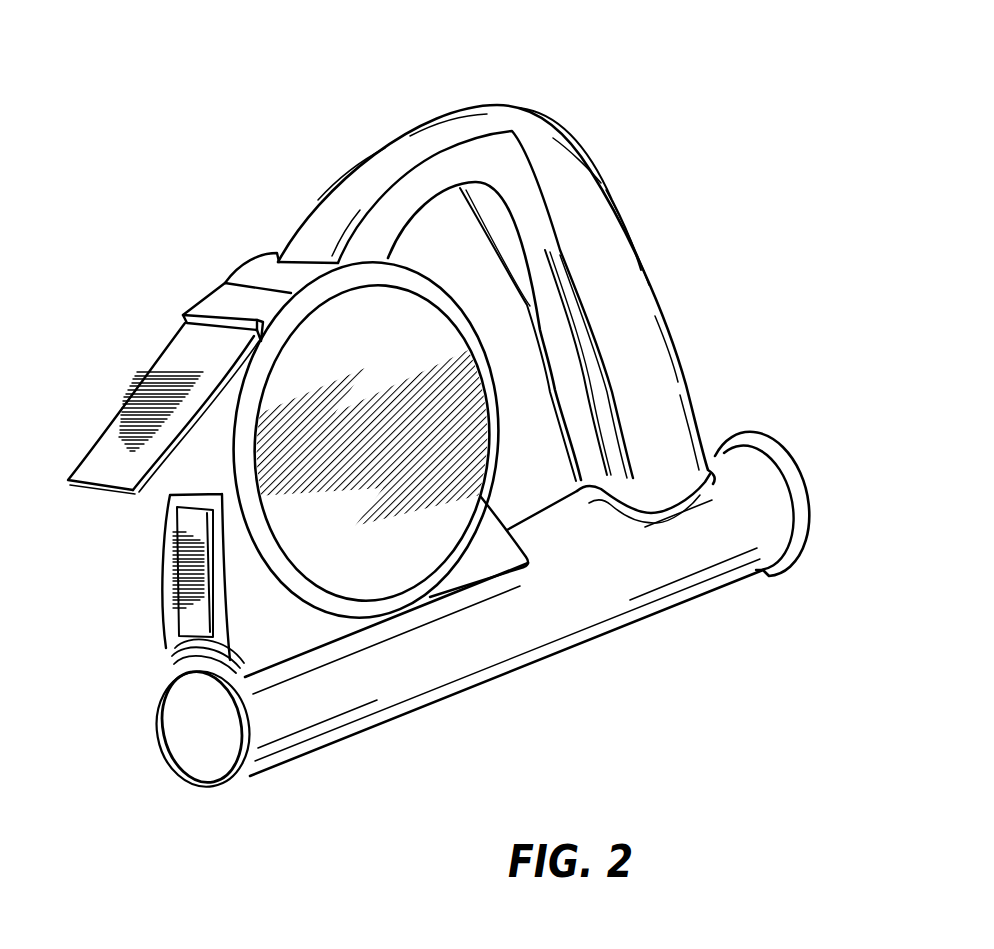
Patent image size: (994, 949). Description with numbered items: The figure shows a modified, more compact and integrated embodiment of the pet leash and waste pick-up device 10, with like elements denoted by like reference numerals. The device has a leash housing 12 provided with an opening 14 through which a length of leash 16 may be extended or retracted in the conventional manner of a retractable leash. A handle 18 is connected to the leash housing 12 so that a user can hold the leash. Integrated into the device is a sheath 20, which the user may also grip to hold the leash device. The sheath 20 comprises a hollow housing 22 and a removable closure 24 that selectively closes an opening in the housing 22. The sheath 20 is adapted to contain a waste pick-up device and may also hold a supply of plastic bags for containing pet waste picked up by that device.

The pet leash and waste pick-up device 10 is at (221, 146).
The leash housing 12 is at (282, 458).
The opening 14 is at (198, 312).
The leash 16 is at (121, 424).
The handle 18 is at (606, 224).
The sheath 20 is at (437, 677).
The hollow housing 22 is at (577, 631).
The removable closure 24 is at (772, 452).